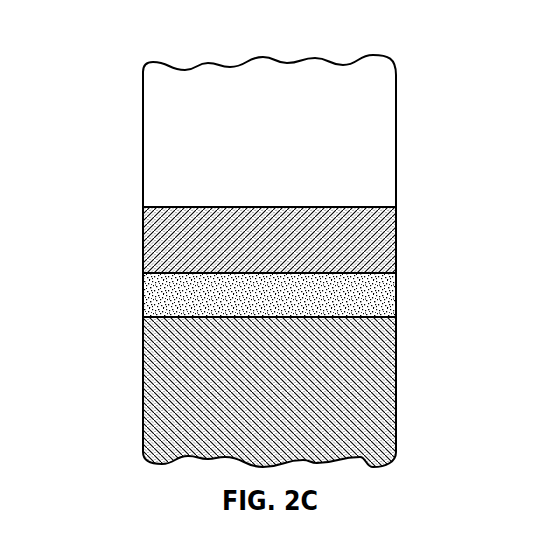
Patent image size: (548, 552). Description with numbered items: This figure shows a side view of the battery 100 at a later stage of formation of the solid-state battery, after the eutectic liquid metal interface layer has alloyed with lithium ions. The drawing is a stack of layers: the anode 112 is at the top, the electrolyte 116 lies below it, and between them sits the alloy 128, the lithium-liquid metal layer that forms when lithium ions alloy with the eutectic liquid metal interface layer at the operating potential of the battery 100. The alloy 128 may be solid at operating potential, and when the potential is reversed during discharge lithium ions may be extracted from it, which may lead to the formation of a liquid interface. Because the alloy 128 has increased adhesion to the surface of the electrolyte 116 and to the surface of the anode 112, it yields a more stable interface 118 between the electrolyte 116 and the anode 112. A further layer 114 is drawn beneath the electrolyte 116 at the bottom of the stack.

The battery 100 is at (118, 78).
The anode 112 is at (386, 128).
The interface 118 is at (188, 250).
The alloy 128 is at (383, 243).
The electrolyte 116 is at (384, 300).
The substrate layer 114 is at (375, 374).